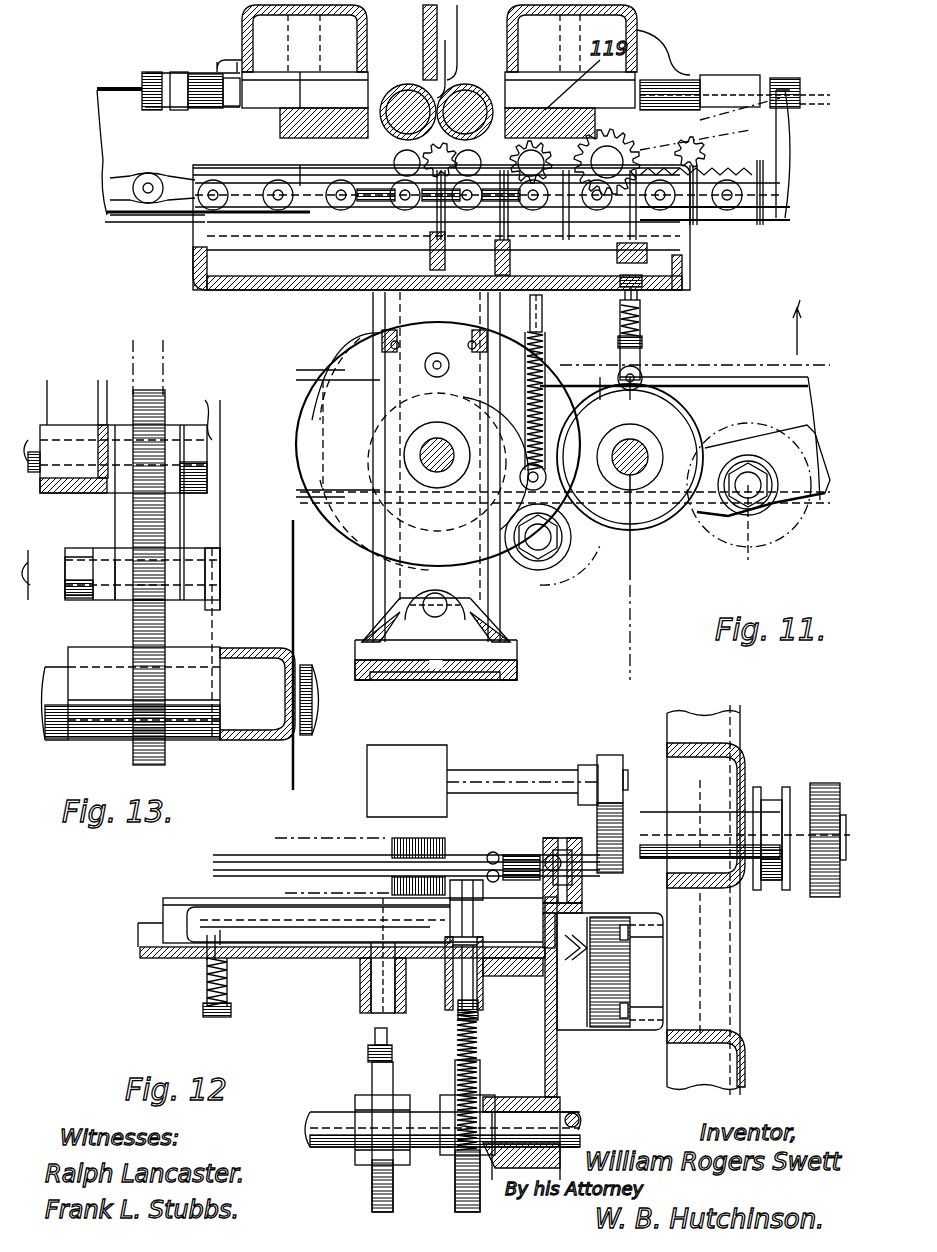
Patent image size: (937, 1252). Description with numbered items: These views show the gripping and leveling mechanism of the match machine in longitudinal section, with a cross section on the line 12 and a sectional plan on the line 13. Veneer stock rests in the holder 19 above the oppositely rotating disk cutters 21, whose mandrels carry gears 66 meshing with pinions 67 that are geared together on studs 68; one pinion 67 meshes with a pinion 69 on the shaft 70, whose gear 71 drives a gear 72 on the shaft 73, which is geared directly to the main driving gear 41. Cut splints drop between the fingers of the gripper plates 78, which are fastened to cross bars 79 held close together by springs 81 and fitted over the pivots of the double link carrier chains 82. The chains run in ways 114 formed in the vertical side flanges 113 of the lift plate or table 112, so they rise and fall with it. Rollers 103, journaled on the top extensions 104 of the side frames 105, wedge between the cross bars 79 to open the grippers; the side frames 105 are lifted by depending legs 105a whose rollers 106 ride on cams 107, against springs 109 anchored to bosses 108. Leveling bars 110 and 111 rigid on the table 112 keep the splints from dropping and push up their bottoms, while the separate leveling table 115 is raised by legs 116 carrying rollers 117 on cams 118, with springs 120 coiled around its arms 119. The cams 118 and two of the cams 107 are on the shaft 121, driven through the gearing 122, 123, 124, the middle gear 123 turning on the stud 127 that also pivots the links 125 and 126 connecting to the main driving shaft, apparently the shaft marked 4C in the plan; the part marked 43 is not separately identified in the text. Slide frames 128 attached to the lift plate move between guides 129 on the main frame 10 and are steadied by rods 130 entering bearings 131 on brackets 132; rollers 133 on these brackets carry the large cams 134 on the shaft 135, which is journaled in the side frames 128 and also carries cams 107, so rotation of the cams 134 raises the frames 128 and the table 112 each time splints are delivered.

In FIG. 11, the main frame 10 is at (475, 672).
In FIG. 12, the main frame 10 is at (718, 990).
In FIG. 11, the section line 12 is at (647, 632).
In FIG. 11, the section line 13 is at (698, 227).
In FIG. 11, the holder 19 is at (422, 33).
In FIG. 11, the disk cutters 21 is at (470, 63).
In FIG. 11, the main driving gear 41 is at (755, 175).
In FIG. 12, the pulley 43 is at (770, 800).
In FIG. 13, the shaft end 4C is at (316, 725).
In FIG. 11, the gears 66 is at (385, 105).
In FIG. 11, the pinions 67 is at (430, 162).
In FIG. 11, the studs 68 is at (394, 163).
In FIG. 11, the pinion 69 is at (612, 145).
In FIG. 11, the shaft 70 is at (570, 102).
In FIG. 11, the gear 71 is at (680, 152).
In FIG. 11, the gear 72 is at (710, 160).
In FIG. 11, the shaft 73 is at (695, 165).
In FIG. 11, the plates 78 is at (380, 210).
In FIG. 12, the cross bars 79 is at (466, 852).
In FIG. 12, the springs 81 is at (497, 850).
In FIG. 11, the double link chains 82 is at (190, 205).
In FIG. 12, the double link chains 82 is at (560, 850).
In FIG. 11, the rollers 103 is at (432, 212).
In FIG. 12, the rollers 103 is at (474, 897).
In FIG. 11, the top extensions 104 is at (498, 212).
In FIG. 11, the side frames 105 is at (545, 310).
In FIG. 12, the side frames 105 is at (480, 915).
In FIG. 11, the depending legs 105a is at (670, 340).
In FIG. 12, the depending legs 105a is at (480, 1015).
In FIG. 11, the rollers 106 is at (425, 370).
In FIG. 12, the rollers 106 is at (478, 1040).
In FIG. 11, the cams 107 is at (520, 410).
In FIG. 12, the cams 107 is at (460, 1185).
In FIG. 11, the bosses 108 is at (550, 330).
In FIG. 12, the springs 109 is at (480, 1077).
In FIG. 11, the leveling bar 110 is at (372, 294).
In FIG. 11, the leveling bar 111 is at (565, 240).
In FIG. 11, the lift plate 112 is at (262, 276).
In FIG. 12, the lift plate 112 is at (312, 960).
In FIG. 11, the vertical side flanges 113 is at (280, 170).
In FIG. 12, the vertical side flanges 113 is at (582, 890).
In FIG. 11, the ways 114 is at (200, 222).
In FIG. 12, the ways 114 is at (548, 840).
In FIG. 11, the leveling table 115 is at (650, 255).
In FIG. 12, the leveling table 115 is at (215, 945).
In FIG. 12, the legs 116 is at (378, 1000).
In FIG. 12, the rollers 117 is at (370, 1052).
In FIG. 11, the cams 118 is at (653, 525).
In FIG. 12, the cams 118 is at (375, 1080).
In FIG. 11, the arms 119 is at (645, 290).
In FIG. 12, the arms 119 is at (215, 1017).
In FIG. 11, the springs 120 is at (642, 318).
In FIG. 12, the springs 120 is at (205, 980).
In FIG. 11, the shaft 121 is at (630, 510).
In FIG. 13, the shaft 121 is at (205, 405).
In FIG. 12, the shaft 121 is at (588, 1100).
In FIG. 13, the gear 122 is at (155, 495).
In FIG. 13, the middle gear 123 is at (170, 575).
In FIG. 13, the gear 124 is at (152, 762).
In FIG. 11, the link 125 is at (800, 510).
In FIG. 13, the link 125 is at (220, 615).
In FIG. 11, the link 126 is at (700, 525).
In FIG. 13, the link 126 is at (175, 535).
In FIG. 11, the stud 127 is at (770, 520).
In FIG. 13, the stud 127 is at (52, 590).
In FIG. 11, the slide frame 128 is at (645, 350).
In FIG. 13, the slide frame 128 is at (68, 495).
In FIG. 12, the slide frame 128 is at (556, 1077).
In FIG. 11, the guides 129 is at (400, 320).
In FIG. 12, the guides 129 is at (590, 1030).
In FIG. 11, the rods 130 is at (410, 550).
In FIG. 11, the bearings 131 is at (405, 595).
In FIG. 11, the brackets 132 is at (385, 615).
In FIG. 11, the rollers 133 is at (400, 670).
In FIG. 11, the large cams 134 is at (355, 520).
In FIG. 11, the shaft 135 is at (420, 447).